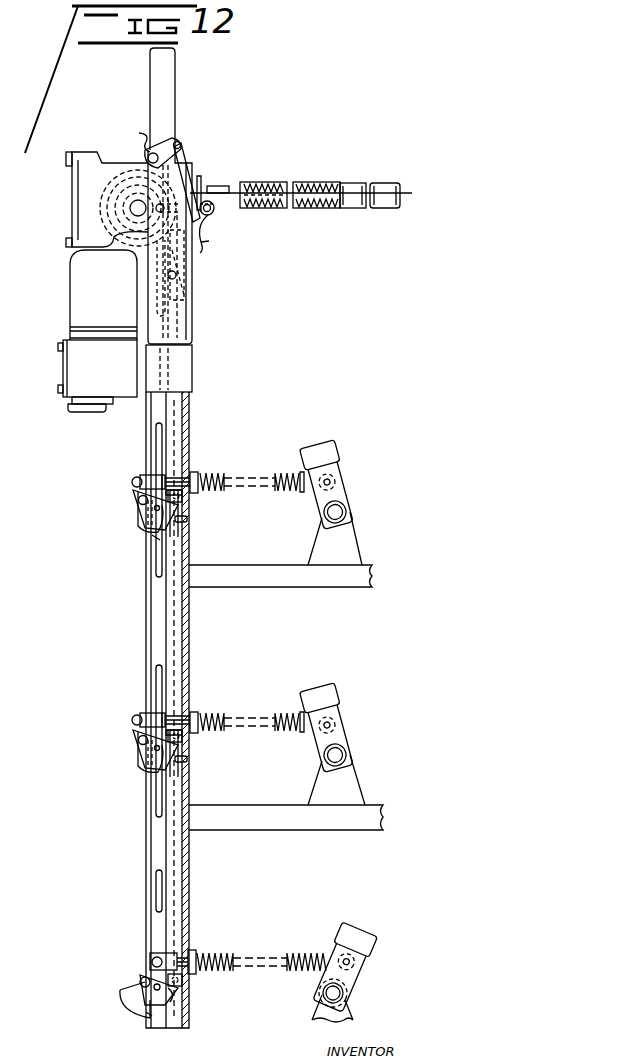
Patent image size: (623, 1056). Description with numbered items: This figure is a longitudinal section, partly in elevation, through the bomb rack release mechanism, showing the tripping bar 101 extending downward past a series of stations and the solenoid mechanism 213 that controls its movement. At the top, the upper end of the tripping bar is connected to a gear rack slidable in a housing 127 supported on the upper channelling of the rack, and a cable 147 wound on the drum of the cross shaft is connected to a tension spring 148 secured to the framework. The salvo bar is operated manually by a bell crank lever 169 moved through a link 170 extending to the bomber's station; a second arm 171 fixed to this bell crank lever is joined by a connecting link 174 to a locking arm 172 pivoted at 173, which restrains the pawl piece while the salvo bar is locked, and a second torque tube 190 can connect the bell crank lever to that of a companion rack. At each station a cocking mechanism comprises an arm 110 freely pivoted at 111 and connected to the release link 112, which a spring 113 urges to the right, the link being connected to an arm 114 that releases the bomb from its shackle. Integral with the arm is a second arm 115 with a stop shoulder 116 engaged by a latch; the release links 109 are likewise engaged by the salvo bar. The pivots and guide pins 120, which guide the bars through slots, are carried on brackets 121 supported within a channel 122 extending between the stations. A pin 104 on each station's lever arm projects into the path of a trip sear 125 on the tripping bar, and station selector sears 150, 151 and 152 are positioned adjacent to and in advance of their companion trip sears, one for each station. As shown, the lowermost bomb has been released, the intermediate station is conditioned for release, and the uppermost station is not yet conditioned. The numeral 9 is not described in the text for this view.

The housing 127 is at (170, 93).
The locking arm 172 is at (164, 149).
The pivot 173 is at (146, 140).
The connecting link 174 is at (183, 157).
The bell crank lever 169 is at (200, 187).
The link 170 is at (228, 186).
The cable 147 is at (233, 200).
The tension spring 148 is at (305, 210).
The second torque tube 190 is at (212, 213).
The second arm 171 is at (204, 238).
The solenoid mechanism 213 is at (56, 294).
The tripping bar 101 is at (168, 400).
The channel 122 is at (190, 611).
The station selector sear 152 is at (157, 442).
The arm 114 is at (347, 489).
The spring 113 is at (214, 478).
The release links 109 is at (193, 474).
The release link 112 is at (142, 475).
The arm 110 is at (132, 483).
The pivot 111 is at (138, 499).
The second arm 115 is at (143, 523).
The guide pins 120 is at (152, 537).
The station selector sear 151 is at (143, 753).
The station selector sear 150 is at (148, 1017).
The pin 104 is at (184, 500).
The stop shoulder 116 is at (188, 519).
The brackets 121 is at (178, 529).
The trip sear 125 is at (176, 462).
The frame 9 is at (10, 165).